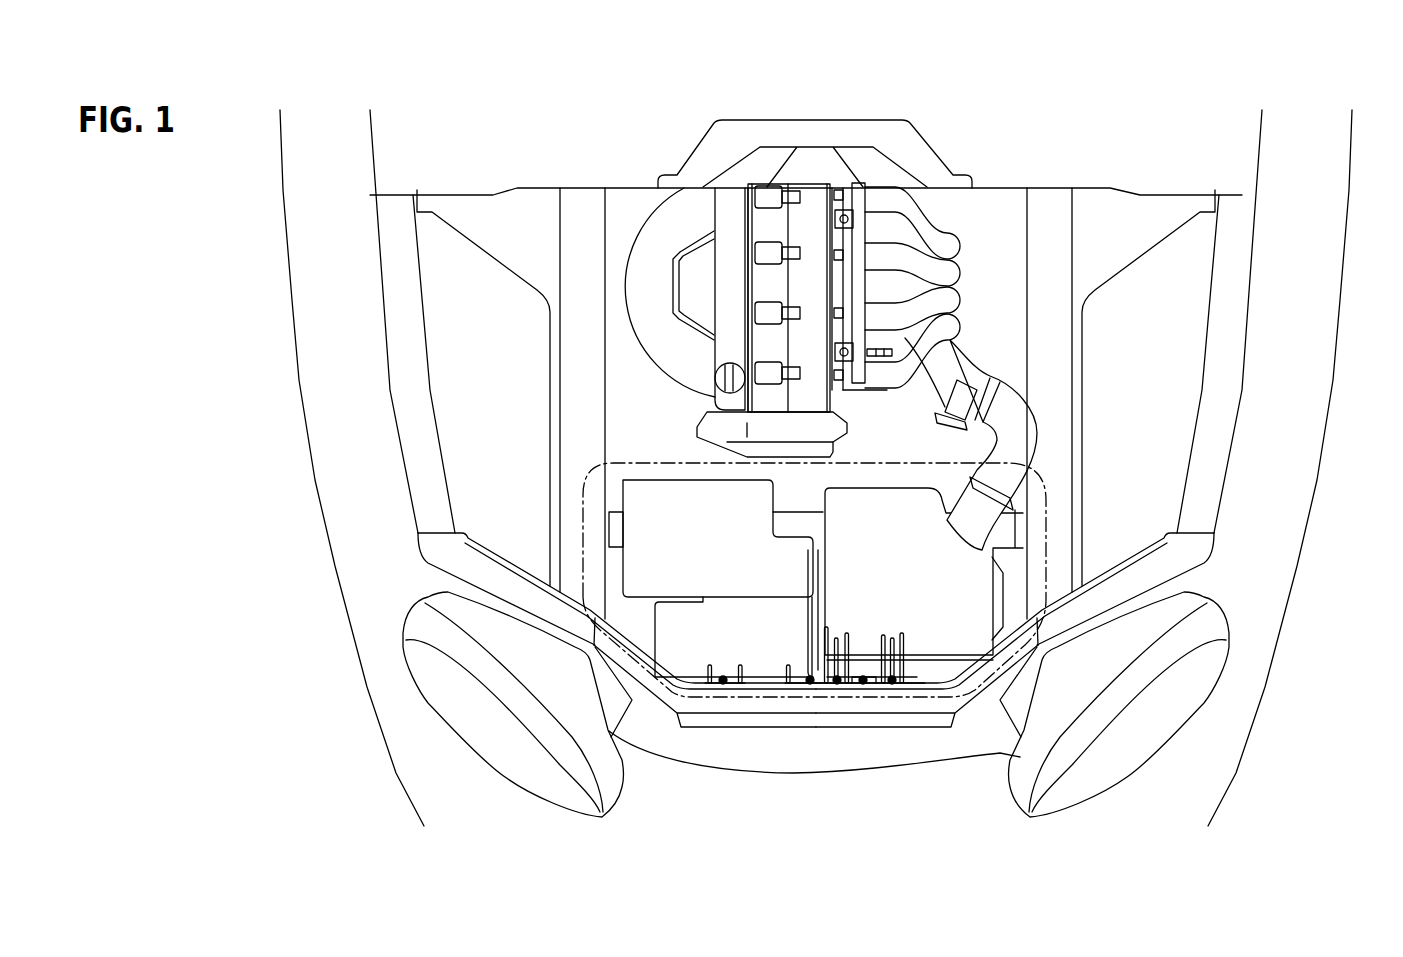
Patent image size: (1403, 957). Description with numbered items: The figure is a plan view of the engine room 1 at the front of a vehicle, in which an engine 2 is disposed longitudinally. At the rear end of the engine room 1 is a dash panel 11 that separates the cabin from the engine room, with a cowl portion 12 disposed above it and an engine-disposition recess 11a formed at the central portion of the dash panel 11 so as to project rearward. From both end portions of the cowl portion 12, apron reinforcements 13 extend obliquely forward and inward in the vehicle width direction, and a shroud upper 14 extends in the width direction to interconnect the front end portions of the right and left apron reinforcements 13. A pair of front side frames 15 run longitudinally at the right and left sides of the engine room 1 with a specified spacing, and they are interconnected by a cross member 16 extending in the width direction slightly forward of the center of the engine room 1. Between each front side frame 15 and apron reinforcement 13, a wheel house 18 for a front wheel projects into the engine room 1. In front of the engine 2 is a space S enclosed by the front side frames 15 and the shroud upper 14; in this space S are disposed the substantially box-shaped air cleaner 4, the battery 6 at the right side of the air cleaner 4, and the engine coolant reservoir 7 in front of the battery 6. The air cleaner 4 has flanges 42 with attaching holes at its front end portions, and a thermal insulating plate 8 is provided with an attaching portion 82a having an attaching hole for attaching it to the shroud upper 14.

The engine room 1 is at (624, 418).
The engine 2 is at (670, 332).
The air cleaner 4 is at (880, 485).
The battery 6 is at (678, 479).
The engine coolant reservoir 7 is at (651, 632).
The thermal insulating plate 8 is at (1007, 597).
The dash panel 11 is at (982, 190).
The engine-disposition recess 11a is at (925, 144).
The cowl portion 12 is at (1018, 170).
The apron reinforcement 13 is at (376, 267).
The shroud upper 14 is at (420, 560).
The front side frame 15 is at (556, 230).
The cross member 16 is at (808, 509).
The wheel house 18 is at (493, 252).
The flange 42 is at (820, 686).
The attaching portion 82a is at (873, 686).
The space S is at (1049, 529).